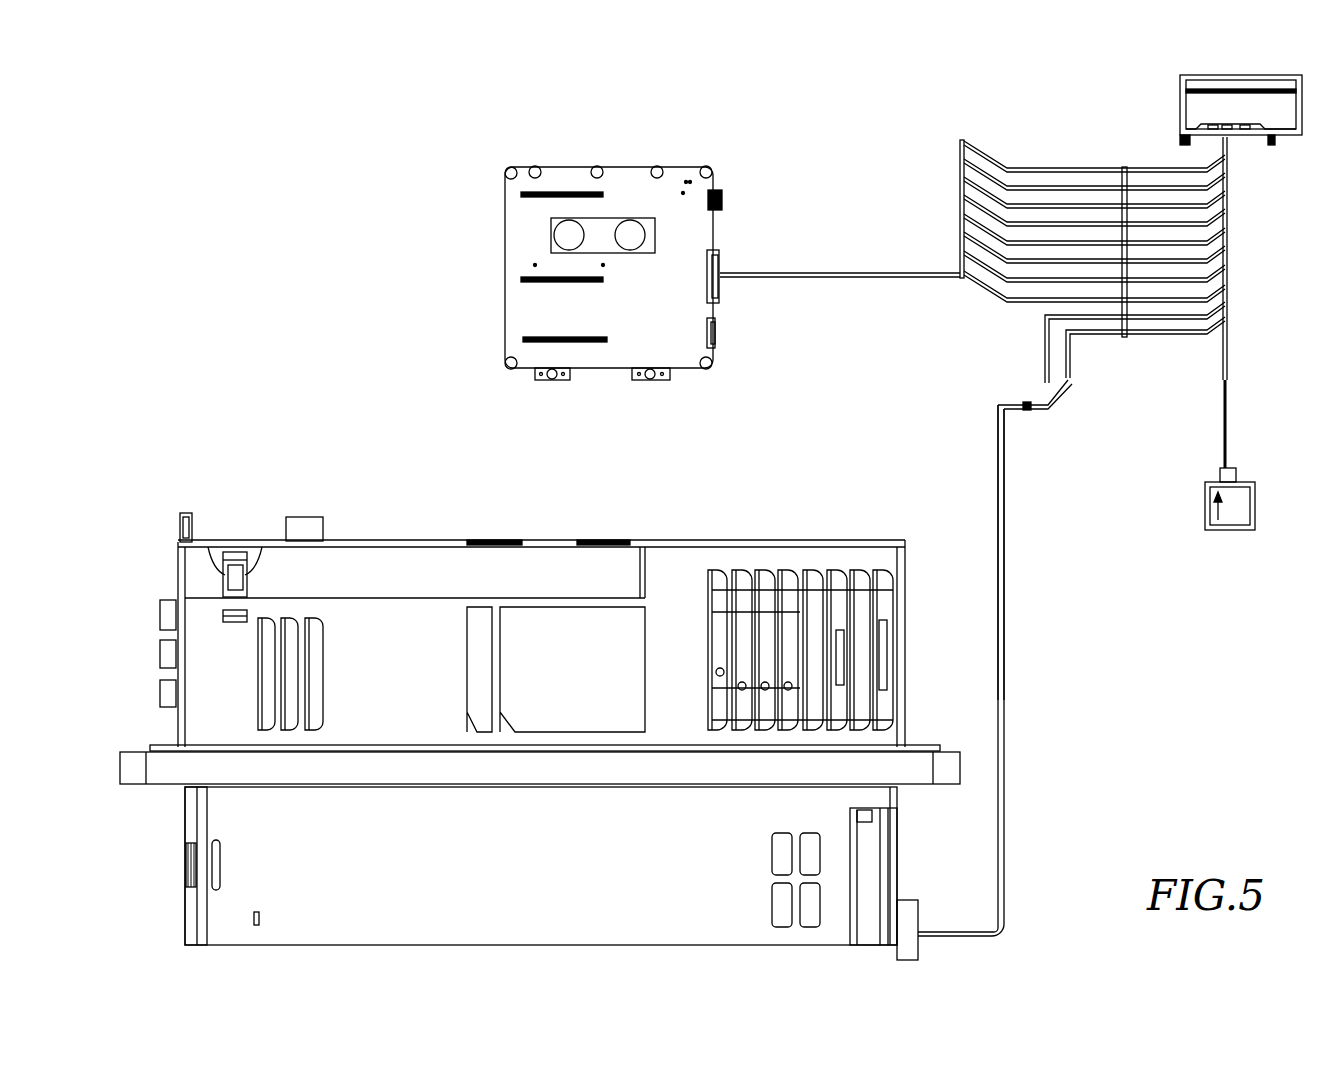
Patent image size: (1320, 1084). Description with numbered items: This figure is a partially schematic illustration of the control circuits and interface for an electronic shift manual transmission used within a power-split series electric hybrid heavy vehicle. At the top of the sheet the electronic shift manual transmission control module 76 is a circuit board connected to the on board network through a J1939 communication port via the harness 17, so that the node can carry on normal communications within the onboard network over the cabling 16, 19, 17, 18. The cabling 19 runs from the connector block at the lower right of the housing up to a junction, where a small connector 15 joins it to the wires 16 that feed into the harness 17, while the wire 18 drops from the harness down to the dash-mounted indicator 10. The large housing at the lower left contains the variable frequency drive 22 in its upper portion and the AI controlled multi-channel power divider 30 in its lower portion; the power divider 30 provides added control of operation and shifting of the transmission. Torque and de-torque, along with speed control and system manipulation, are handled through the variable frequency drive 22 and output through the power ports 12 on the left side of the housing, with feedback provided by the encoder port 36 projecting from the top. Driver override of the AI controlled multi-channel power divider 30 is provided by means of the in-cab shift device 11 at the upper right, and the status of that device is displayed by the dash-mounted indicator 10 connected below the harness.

The dash-mounted indicator 10 is at (1190, 508).
The in-cab shift device 11 is at (1166, 95).
The power ports 12 is at (158, 590).
The cable connector 15 is at (1040, 410).
The cabling 16 is at (1072, 366).
The J1939 communication port cabling 17 is at (1080, 153).
The cabling 18 is at (1222, 403).
The cabling 19 is at (1005, 632).
The variable frequency drive 22 is at (437, 527).
The AI controlled multi-channel power divider 30 is at (832, 850).
The encoder port 36 is at (183, 510).
The electronic shift manual transmission control module (TCM) 76 is at (487, 280).